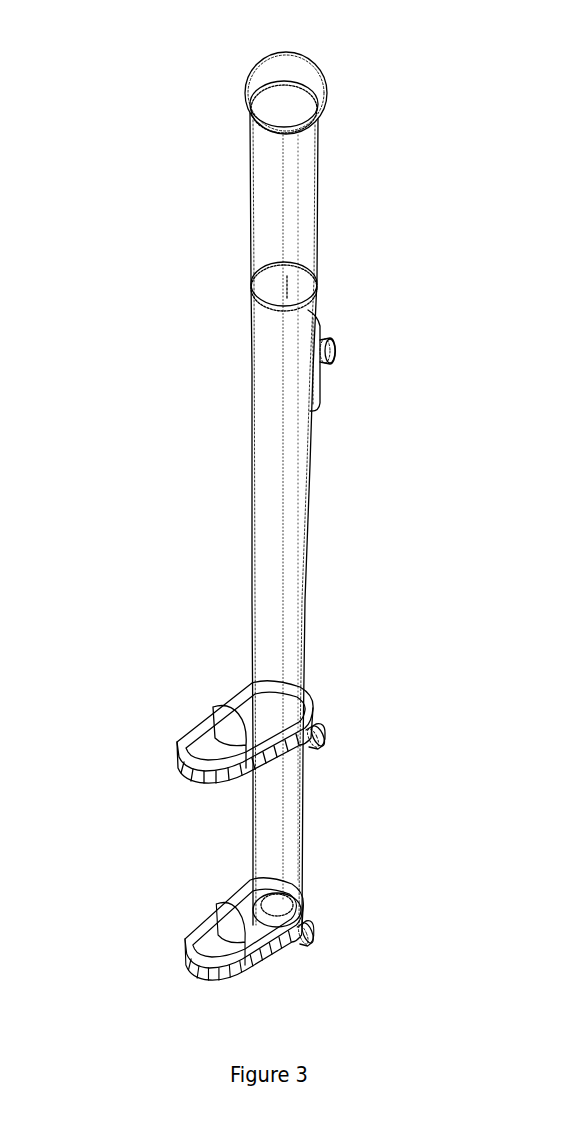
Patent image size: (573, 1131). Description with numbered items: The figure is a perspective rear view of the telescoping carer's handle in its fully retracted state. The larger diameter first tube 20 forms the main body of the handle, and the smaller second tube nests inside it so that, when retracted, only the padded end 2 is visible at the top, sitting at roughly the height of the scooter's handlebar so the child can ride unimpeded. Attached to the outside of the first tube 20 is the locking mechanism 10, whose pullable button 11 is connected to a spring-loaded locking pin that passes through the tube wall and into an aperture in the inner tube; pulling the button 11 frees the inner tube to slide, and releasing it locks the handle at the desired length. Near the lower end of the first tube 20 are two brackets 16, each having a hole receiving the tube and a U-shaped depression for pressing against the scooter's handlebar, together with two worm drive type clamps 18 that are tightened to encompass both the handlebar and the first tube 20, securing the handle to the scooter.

The padded end 2 is at (234, 75).
The locking mechanism 10 is at (325, 385).
The button 11 is at (337, 347).
The bracket 16 is at (167, 830).
The worm drive type clamp 18 is at (398, 835).
The first tube 20 is at (305, 568).